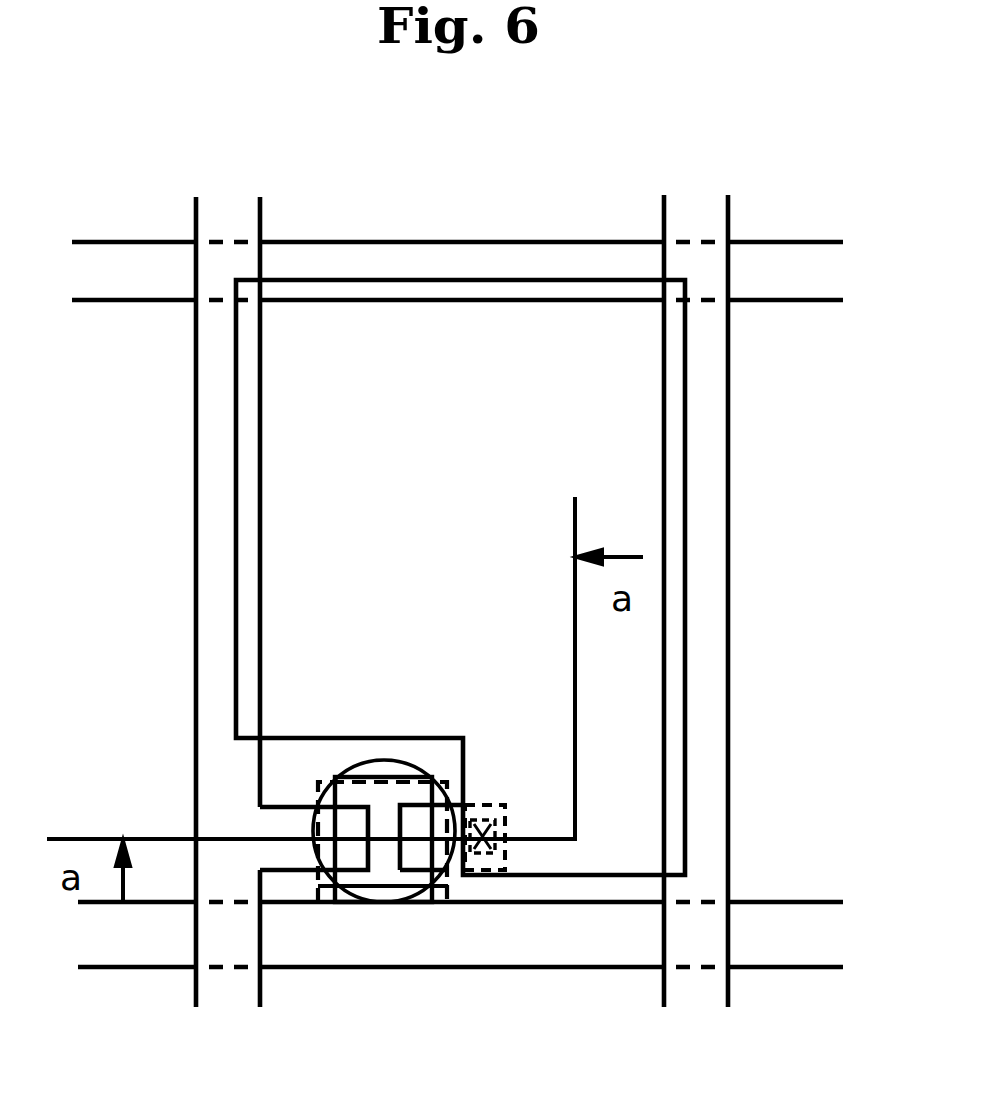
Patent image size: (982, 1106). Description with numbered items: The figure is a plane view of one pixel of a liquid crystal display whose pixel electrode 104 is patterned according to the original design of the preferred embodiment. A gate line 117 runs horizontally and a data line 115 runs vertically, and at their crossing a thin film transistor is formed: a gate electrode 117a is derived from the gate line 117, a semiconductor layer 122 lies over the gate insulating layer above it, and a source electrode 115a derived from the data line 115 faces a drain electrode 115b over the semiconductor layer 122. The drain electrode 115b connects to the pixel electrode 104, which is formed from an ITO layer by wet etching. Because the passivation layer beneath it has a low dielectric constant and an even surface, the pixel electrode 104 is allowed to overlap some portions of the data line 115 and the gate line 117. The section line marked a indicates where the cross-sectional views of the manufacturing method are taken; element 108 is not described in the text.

The pixel electrode 104 is at (592, 402).
The active layer 108 is at (385, 890).
The data line 115 is at (212, 443).
The source electrode 115a is at (356, 853).
The drain electrode 115b is at (406, 780).
The gate line 117 is at (109, 951).
The gate electrode 117a is at (380, 773).
The semiconductor layer 122 is at (410, 878).